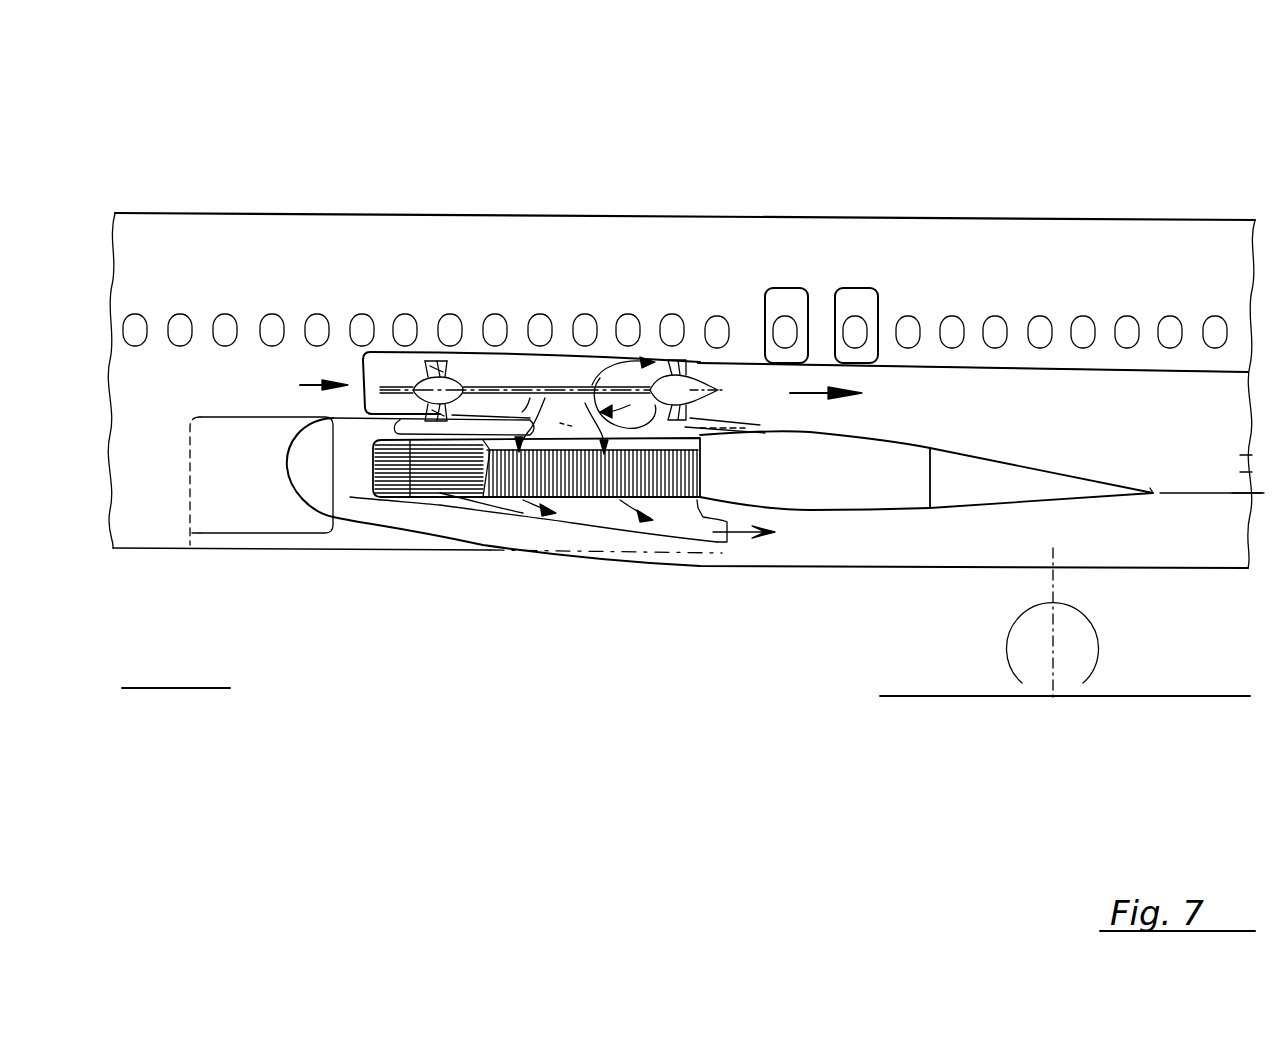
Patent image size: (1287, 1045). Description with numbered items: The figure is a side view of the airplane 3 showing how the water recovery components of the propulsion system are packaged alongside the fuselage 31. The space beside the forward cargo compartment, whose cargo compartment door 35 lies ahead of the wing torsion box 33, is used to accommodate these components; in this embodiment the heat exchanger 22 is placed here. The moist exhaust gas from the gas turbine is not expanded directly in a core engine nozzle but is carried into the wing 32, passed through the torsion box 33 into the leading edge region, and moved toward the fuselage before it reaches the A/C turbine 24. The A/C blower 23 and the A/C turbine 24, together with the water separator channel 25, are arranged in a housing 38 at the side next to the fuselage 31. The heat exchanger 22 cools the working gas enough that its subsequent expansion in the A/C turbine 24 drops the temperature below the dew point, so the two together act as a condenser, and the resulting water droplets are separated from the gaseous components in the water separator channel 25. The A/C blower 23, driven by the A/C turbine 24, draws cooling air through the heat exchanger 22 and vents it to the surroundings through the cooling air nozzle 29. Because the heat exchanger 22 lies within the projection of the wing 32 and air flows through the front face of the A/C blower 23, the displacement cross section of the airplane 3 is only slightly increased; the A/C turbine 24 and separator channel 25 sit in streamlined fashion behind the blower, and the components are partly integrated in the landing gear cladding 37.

The airplane 3 is at (622, 150).
The fuselage 31 is at (882, 216).
The housing 38 is at (385, 367).
The A/C blower 23 is at (428, 440).
The A/C turbine 24 is at (682, 420).
The water separator channel 25 is at (1060, 405).
The cargo compartment door 35 is at (258, 510).
The heat exchanger 22 is at (497, 483).
The landing gear cladding 37 is at (587, 560).
The cooling air nozzle 29 is at (688, 528).
The torsion box 33 is at (852, 517).
The wing 32 is at (950, 537).